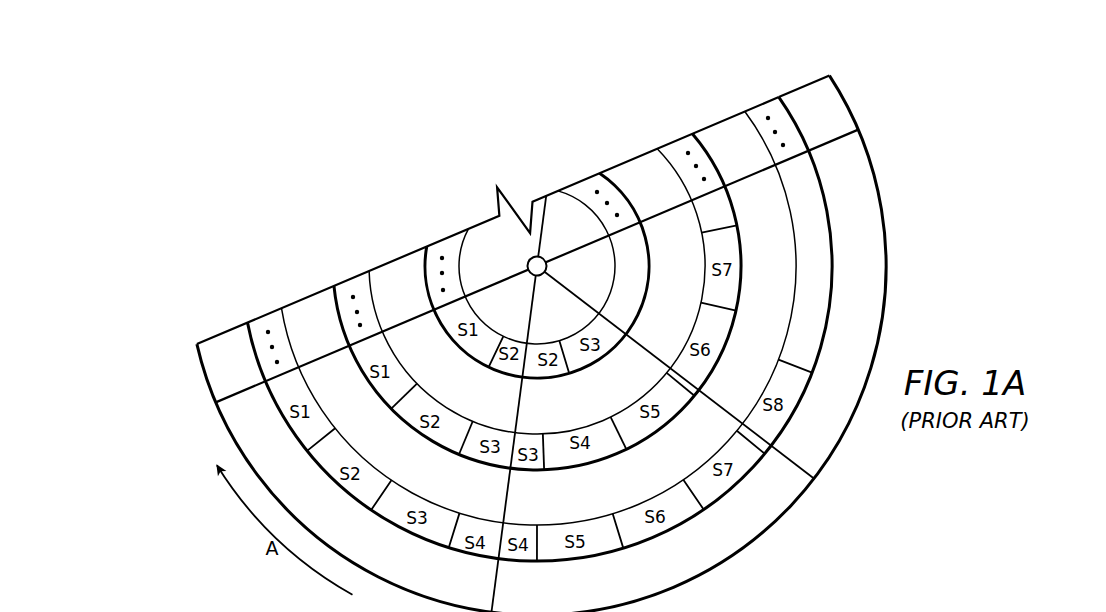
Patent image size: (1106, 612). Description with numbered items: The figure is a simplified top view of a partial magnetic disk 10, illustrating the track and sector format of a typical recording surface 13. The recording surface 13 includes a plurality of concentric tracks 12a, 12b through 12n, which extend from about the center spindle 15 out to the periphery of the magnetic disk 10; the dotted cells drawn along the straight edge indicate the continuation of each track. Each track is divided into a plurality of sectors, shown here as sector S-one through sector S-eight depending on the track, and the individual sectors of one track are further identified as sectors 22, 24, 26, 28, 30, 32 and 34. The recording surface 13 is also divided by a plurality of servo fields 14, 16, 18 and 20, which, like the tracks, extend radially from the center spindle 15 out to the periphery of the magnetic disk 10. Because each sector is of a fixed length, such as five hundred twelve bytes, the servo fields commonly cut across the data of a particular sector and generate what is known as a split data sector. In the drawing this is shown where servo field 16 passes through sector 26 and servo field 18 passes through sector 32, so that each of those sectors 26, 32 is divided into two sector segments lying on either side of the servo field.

The magnetic disk 10 is at (892, 151).
The track 12a is at (434, 224).
The track 12b is at (342, 262).
The track 12n is at (259, 299).
The recording surface 13 is at (399, 279).
The servo field 14 is at (233, 398).
The center spindle 15 is at (542, 276).
The servo field 16 is at (494, 580).
The servo field 18 is at (786, 455).
The servo field 20 is at (818, 142).
The sector 22 is at (377, 393).
The sector 24 is at (410, 421).
The sector 26 is at (471, 456).
The sector 28 is at (602, 456).
The sector 30 is at (677, 406).
The sector 32 is at (679, 382).
The sector 34 is at (734, 251).